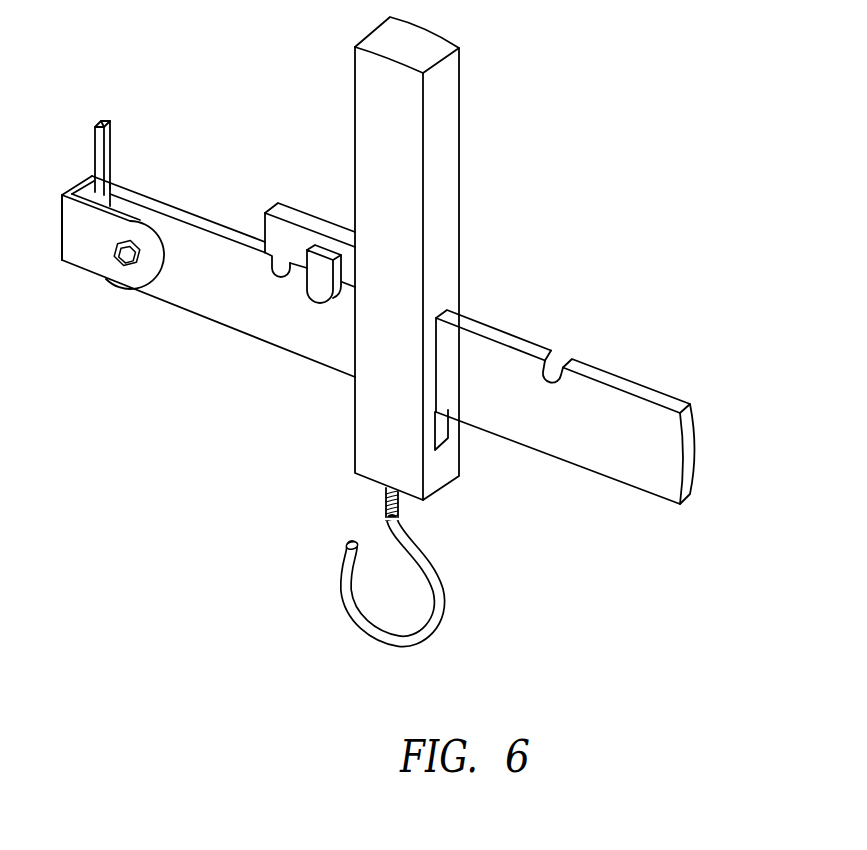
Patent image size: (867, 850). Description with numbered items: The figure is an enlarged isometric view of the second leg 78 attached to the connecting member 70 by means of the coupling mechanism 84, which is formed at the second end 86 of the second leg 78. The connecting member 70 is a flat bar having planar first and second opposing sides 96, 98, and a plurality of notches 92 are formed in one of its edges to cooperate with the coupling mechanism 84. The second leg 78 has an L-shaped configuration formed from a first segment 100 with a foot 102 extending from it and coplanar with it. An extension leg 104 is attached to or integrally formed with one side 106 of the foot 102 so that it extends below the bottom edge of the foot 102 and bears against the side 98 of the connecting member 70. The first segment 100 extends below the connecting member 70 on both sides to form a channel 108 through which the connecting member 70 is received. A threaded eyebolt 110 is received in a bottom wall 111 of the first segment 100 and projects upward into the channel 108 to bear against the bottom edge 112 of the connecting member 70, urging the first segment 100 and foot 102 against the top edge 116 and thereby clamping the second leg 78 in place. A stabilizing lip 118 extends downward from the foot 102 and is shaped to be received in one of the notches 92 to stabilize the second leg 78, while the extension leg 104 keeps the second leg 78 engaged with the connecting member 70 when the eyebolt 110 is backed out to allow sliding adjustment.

The connecting member 70 is at (157, 305).
The second leg 78 is at (465, 182).
The coupling mechanism 84 is at (254, 125).
The second end 86 is at (448, 271).
The notches 92 is at (567, 333).
The first side 96 is at (588, 412).
The second side 98 is at (647, 477).
The first segment 100 is at (367, 168).
The foot 102 is at (272, 209).
The extension leg 104 is at (318, 312).
The side of the foot 106 is at (283, 231).
The channel 108 is at (352, 430).
The threaded eyebolt 110 is at (348, 612).
The bottom wall 111 is at (357, 476).
The bottom edge 112 is at (690, 510).
The top edge 116 is at (160, 205).
The stabilizing lip 118 is at (281, 292).